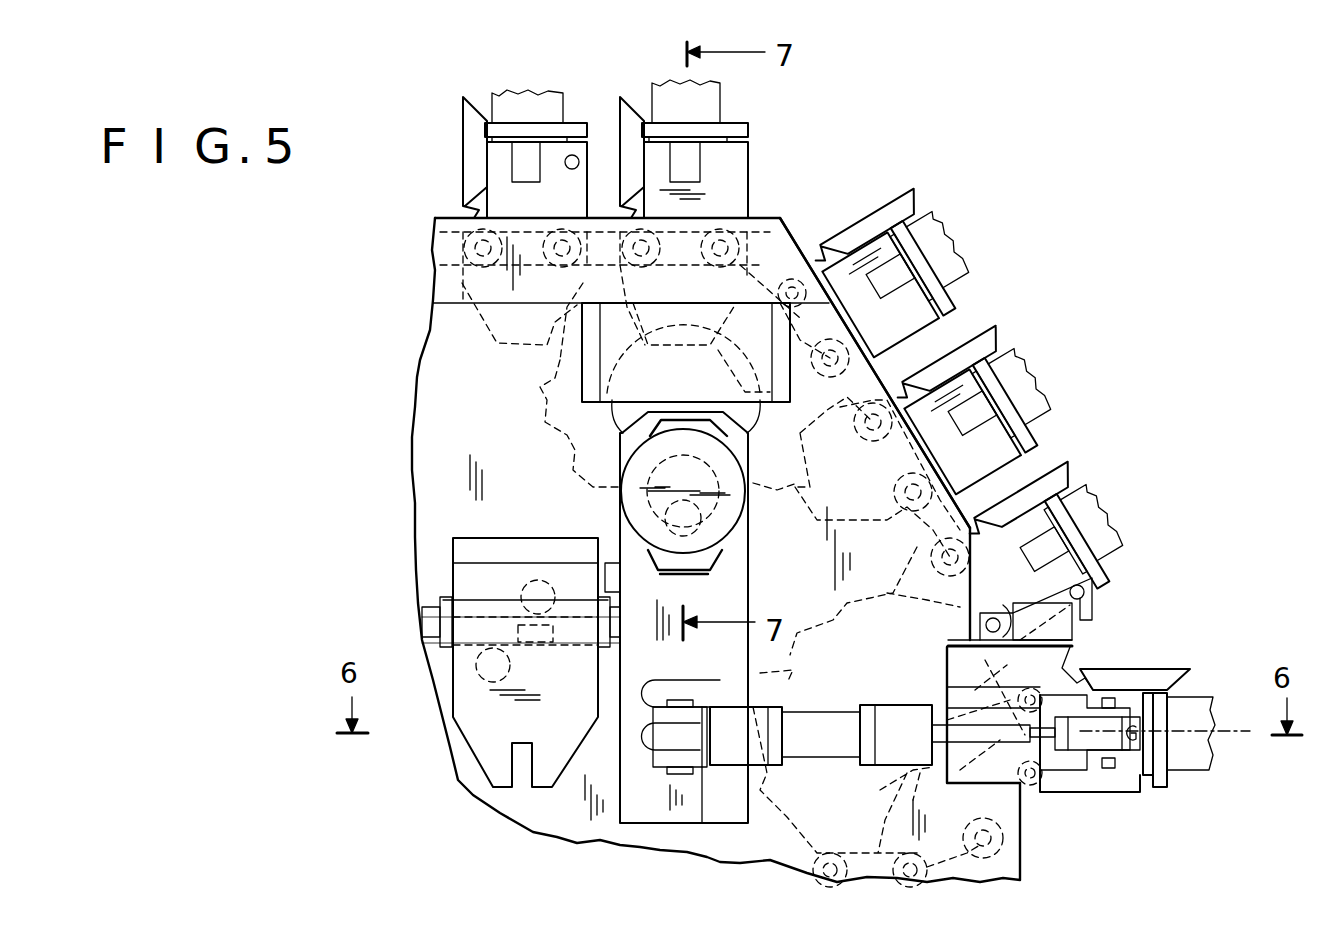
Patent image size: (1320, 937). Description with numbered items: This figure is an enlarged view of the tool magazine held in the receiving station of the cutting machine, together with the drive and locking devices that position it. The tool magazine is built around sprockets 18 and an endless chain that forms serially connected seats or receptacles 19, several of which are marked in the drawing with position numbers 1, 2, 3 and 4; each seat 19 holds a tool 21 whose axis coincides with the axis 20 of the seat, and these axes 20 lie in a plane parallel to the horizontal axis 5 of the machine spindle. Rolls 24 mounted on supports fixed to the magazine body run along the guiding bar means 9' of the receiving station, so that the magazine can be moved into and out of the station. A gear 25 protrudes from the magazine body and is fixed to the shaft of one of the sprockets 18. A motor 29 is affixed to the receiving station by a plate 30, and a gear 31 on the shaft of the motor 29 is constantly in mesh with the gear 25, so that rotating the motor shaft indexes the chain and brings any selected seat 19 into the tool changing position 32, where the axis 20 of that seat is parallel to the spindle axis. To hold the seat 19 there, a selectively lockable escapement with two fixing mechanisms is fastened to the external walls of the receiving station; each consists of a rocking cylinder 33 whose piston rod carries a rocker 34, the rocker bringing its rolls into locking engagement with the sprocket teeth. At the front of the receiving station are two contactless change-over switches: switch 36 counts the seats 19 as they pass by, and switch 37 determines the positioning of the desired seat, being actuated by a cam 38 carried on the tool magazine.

The tool holder station 1 is at (525, 154).
The tool holder station 2 is at (684, 149).
The tool holder station 3 is at (897, 271).
The tool holder station 4 is at (979, 408).
The horizontal axis 5 is at (1051, 549).
The guiding bar means 9' is at (496, 627).
The sprockets 18 is at (520, 410).
The seats or receptacles 19 is at (1005, 455).
The axes of seats 20 is at (1217, 737).
The tools 21 is at (1195, 705).
The rolls 24 is at (540, 645).
The gear 25 is at (758, 403).
The motor 29 is at (487, 750).
The plate 30 is at (633, 808).
The gear 31 is at (742, 497).
The tool changing position 32 is at (1148, 806).
The rocking cylinder 33 is at (893, 755).
The rocker 34 is at (1102, 742).
The contactless change-over switch 36 is at (993, 617).
The change-over switch 37 is at (1080, 599).
The cam 38 is at (572, 169).